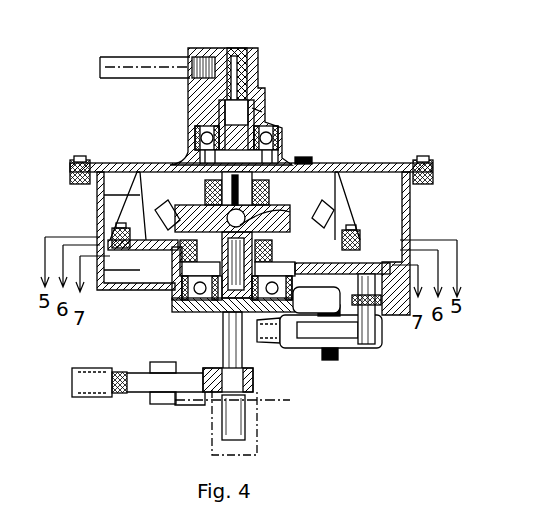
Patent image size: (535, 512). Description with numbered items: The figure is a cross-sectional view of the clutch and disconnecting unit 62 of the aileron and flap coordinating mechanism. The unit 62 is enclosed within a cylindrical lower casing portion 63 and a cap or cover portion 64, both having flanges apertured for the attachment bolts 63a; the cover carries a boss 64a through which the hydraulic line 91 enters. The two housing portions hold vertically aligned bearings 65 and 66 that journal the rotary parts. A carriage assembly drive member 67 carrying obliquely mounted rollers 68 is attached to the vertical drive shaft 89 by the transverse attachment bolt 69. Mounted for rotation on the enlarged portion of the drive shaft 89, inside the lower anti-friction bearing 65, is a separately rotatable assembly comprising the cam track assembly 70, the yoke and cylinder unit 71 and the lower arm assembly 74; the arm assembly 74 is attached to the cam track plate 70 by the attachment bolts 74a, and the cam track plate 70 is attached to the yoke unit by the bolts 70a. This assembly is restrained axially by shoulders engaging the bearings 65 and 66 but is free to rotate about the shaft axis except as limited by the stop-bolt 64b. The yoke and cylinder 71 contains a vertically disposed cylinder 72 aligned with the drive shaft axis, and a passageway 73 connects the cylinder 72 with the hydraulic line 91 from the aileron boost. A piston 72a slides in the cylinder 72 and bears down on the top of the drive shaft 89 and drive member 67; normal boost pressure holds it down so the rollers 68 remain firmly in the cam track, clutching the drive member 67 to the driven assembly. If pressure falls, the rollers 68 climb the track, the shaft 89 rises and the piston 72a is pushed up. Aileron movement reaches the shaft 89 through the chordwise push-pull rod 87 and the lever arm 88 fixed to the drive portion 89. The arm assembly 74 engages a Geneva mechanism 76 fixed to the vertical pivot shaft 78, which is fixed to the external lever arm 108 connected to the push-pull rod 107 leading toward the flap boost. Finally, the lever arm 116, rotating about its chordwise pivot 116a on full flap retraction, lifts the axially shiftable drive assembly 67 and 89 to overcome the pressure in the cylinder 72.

The clutch and disconnecting unit 62 is at (392, 153).
The lower casing portion 63 is at (410, 204).
The attachment bolts 63a is at (78, 160).
The cover portion 64 is at (128, 165).
The cover boss 64a is at (188, 104).
The stop-bolt 64b is at (306, 158).
The lower anti-friction bearing 65 is at (185, 310).
The upper bearing 66 is at (195, 138).
The carriage assembly drive member 67 is at (140, 192).
The rollers 68 is at (340, 198).
The transverse attachment bolt 69 is at (250, 213).
The cam track assembly 70 is at (121, 275).
The bolts 70a is at (351, 232).
The yoke and cylinder unit 71 is at (120, 215).
The cylinder 72 is at (255, 100).
The piston 72a is at (258, 114).
The passageway 73 is at (238, 52).
The lower arm assembly 74 is at (178, 266).
The attachment bolts 74a is at (182, 272).
The Geneva mechanism 76 is at (372, 263).
The vertical pivot shaft 78 is at (366, 338).
The push-pull rod 87 is at (97, 368).
The lever arm 88 is at (195, 404).
The vertical drive shaft 89 is at (222, 332).
The hydraulic line 91 is at (150, 57).
The push-pull rod 107 is at (268, 343).
The external lever arm 108 is at (383, 333).
The lever arm 116 is at (246, 418).
The chordwise pivot 116a is at (272, 398).